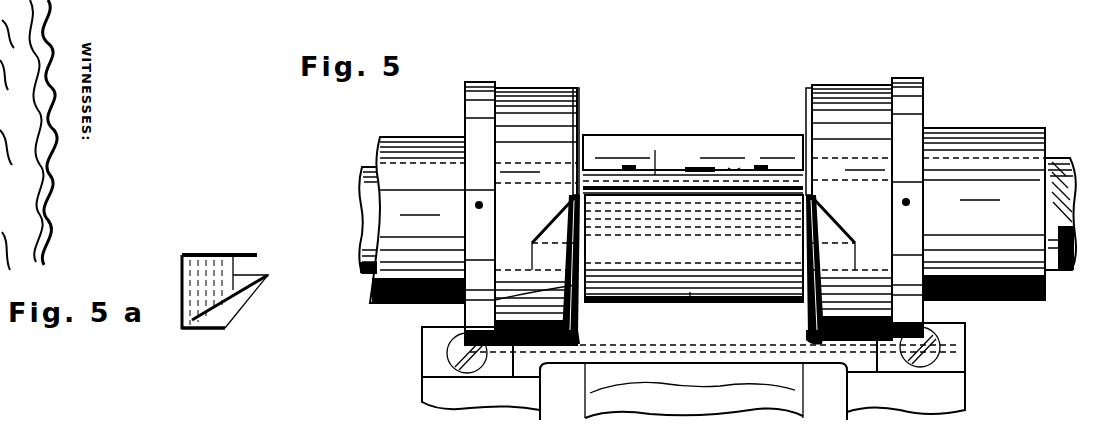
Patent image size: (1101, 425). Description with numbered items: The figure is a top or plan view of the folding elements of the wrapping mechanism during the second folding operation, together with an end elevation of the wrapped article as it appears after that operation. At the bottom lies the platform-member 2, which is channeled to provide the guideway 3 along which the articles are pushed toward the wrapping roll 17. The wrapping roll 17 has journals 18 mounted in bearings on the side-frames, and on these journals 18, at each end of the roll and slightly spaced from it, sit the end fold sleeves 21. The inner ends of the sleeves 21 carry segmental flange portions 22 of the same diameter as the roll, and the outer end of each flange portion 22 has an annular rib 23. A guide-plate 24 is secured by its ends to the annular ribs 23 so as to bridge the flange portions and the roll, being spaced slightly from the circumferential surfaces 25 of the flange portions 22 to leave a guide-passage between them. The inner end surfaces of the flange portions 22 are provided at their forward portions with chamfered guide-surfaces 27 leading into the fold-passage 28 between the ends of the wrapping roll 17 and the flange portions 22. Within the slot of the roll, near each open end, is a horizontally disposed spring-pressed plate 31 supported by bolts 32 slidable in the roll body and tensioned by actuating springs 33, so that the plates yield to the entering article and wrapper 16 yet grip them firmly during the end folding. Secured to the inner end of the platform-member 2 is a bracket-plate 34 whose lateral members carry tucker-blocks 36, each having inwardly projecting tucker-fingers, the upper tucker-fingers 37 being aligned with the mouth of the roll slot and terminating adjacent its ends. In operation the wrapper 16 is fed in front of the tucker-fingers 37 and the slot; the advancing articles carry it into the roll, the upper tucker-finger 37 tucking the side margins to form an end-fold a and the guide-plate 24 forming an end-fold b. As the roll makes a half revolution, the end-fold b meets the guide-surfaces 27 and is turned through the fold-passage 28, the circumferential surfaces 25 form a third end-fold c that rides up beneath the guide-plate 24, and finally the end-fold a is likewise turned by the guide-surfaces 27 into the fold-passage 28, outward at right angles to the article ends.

In FIG. 5, the platform-member 2 is at (540, 394).
In FIG. 5, the guideway 3 is at (694, 396).
In FIG. 5, the wrapper 16 is at (694, 248).
In FIG. 5, the wrapping roll 17 is at (680, 136).
In FIG. 5, the journals 18 is at (363, 218).
In FIG. 5, the end fold sleeves 21 is at (412, 140).
In FIG. 5, the segmental flange portions 22 is at (577, 95).
In FIG. 5, the annular rib 23 is at (482, 84).
In FIG. 5, the guide-plate 24 is at (658, 184).
In FIG. 5, the circumferential surfaces 25 is at (537, 125).
In FIG. 5, the chamfered guide-surfaces 27 is at (580, 313).
In FIG. 5, the fold-passage 28 is at (585, 140).
In FIG. 5, the spring-pressed plate 31 is at (727, 185).
In FIG. 5, the bolts 32 is at (632, 168).
In FIG. 5, the actuating springs 33 is at (700, 166).
In FIG. 5, the bracket-plate 34 is at (448, 400).
In FIG. 5, the tucker-blocks 36 is at (432, 350).
In FIG. 5, the upper tucker-fingers 37 is at (580, 336).
In FIG. 5, the end-fold a is at (492, 296).
In FIG. 5A, the end-fold a is at (262, 293).
In FIG. 5, the end-fold b is at (560, 216).
In FIG. 5A, the end-fold b is at (200, 329).
In FIG. 5, the end-fold c is at (530, 224).
In FIG. 5A, the end-fold c is at (213, 254).